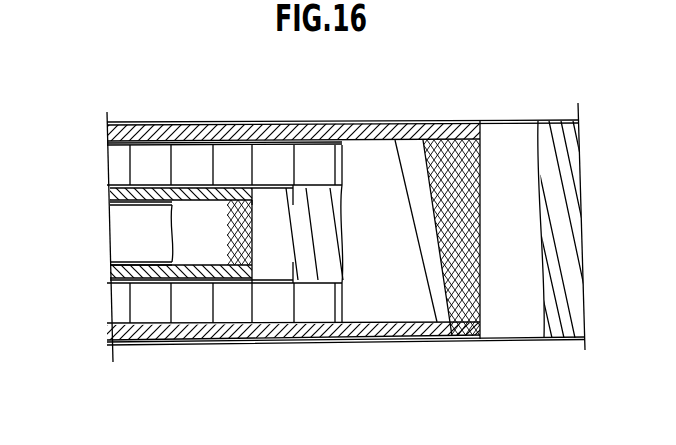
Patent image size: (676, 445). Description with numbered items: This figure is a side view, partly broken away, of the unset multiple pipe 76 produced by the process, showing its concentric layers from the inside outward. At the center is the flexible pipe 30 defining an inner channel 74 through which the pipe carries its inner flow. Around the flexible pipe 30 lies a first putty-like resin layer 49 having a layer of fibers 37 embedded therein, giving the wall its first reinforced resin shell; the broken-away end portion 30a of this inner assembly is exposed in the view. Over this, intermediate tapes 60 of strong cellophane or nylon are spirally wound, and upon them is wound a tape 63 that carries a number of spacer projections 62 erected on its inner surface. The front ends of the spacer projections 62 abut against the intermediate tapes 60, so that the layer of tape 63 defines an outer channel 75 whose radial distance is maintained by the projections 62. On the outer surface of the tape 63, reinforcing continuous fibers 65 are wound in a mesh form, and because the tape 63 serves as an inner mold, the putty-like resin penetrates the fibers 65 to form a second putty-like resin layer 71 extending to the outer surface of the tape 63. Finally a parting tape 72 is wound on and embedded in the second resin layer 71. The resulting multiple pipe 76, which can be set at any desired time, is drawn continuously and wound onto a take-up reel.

The flexible pipe 30 is at (122, 211).
The inner tube end portion 30a is at (193, 265).
The layer of fibers 37 is at (117, 286).
The first putty-like resin layer 49 is at (263, 203).
The intermediate tape 60 is at (322, 216).
The spacer projections 62 is at (213, 162).
The tape 63 is at (172, 302).
The reinforcing continuous fibers 65 is at (457, 250).
The second putty-like resin layer 71 is at (505, 143).
The parting tape 72 is at (555, 217).
The inner channel 74 is at (128, 248).
The outer channel 75 is at (115, 316).
The unset multiple pipe 76 is at (379, 120).